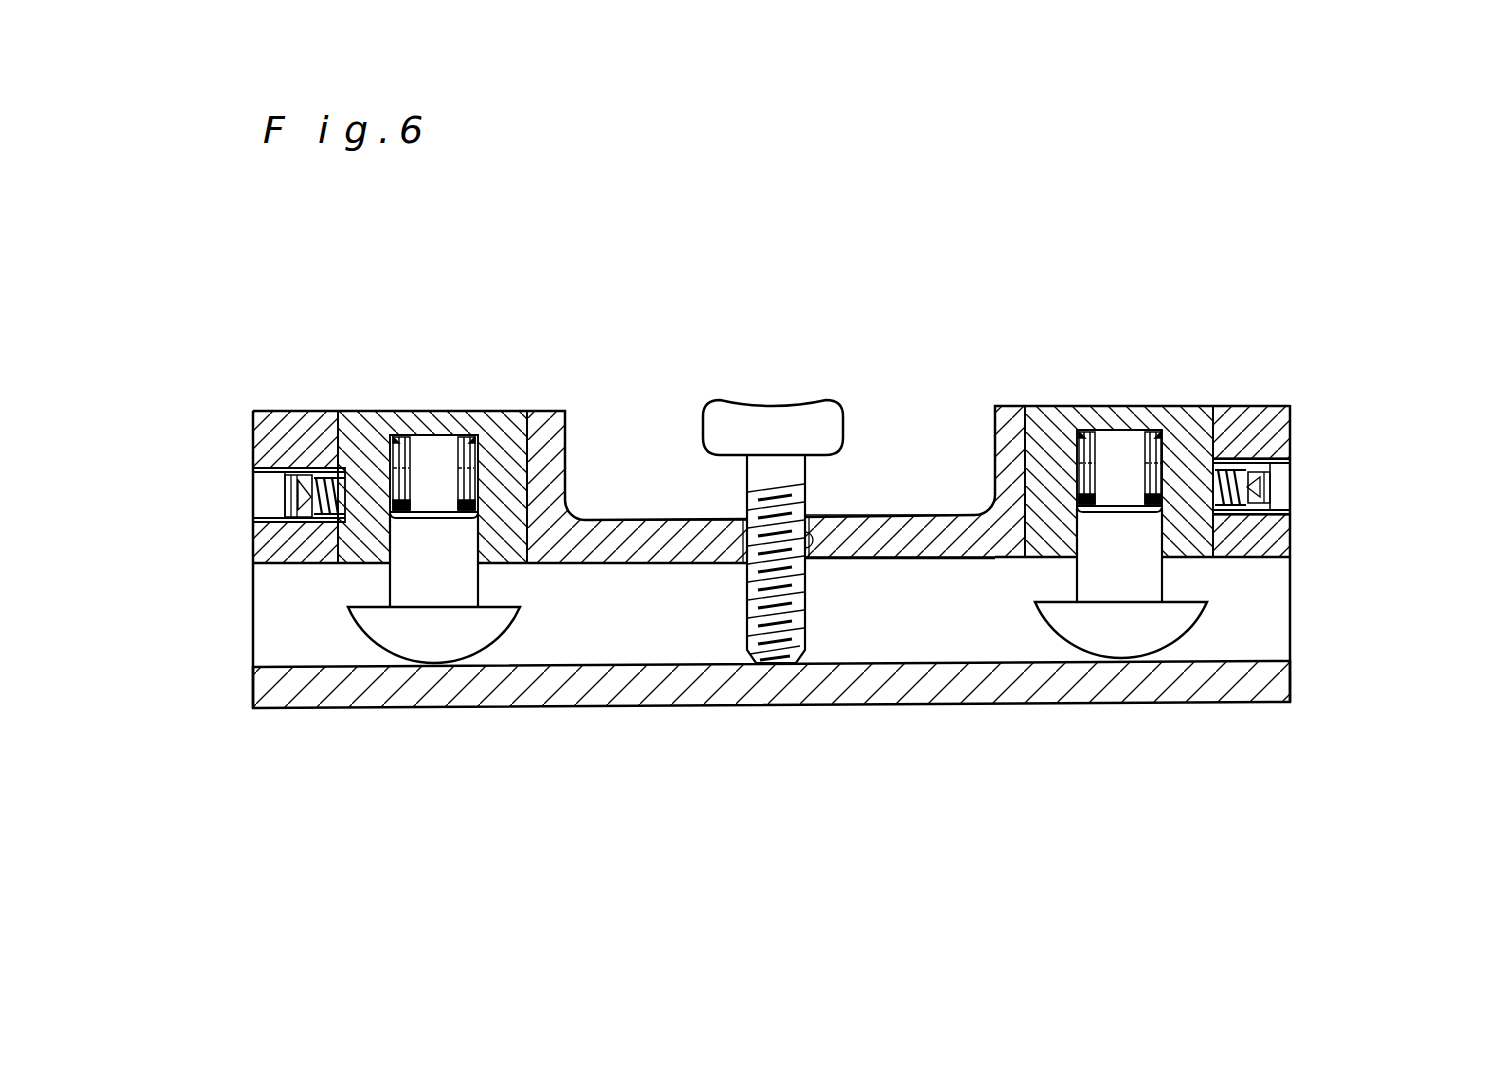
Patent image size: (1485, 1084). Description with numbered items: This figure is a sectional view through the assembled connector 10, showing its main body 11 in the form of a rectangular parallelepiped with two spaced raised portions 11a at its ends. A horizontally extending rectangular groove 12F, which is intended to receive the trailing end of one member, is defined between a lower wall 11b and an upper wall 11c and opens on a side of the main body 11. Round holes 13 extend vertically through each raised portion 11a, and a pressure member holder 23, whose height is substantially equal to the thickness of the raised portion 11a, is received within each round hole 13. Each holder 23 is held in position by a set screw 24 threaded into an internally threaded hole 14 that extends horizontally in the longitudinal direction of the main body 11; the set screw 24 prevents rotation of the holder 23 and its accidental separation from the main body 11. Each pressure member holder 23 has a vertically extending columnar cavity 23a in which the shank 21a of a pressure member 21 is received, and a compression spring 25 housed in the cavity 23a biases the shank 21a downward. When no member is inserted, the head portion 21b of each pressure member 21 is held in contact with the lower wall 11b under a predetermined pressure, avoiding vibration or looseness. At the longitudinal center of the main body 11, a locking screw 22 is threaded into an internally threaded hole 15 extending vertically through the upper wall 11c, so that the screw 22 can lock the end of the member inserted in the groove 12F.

The connector 10 is at (777, 504).
The main body 11 is at (777, 506).
The raised portion 11a is at (253, 428).
The lower wall 11b is at (1290, 681).
The upper wall 11c is at (695, 519).
The rectangular groove 12F is at (1275, 615).
The round hole 13 is at (767, 428).
The internally threaded hole 14 is at (768, 479).
The internally threaded hole 15 is at (855, 498).
The pressure member 21 is at (777, 584).
The shank 21a is at (482, 570).
The head portion 21b is at (510, 627).
The locking screw 22 is at (804, 612).
The pressure member holder 23 is at (383, 423).
The columnar cavity 23a is at (478, 527).
The set screw 24 is at (292, 497).
The compression spring 25 is at (420, 445).